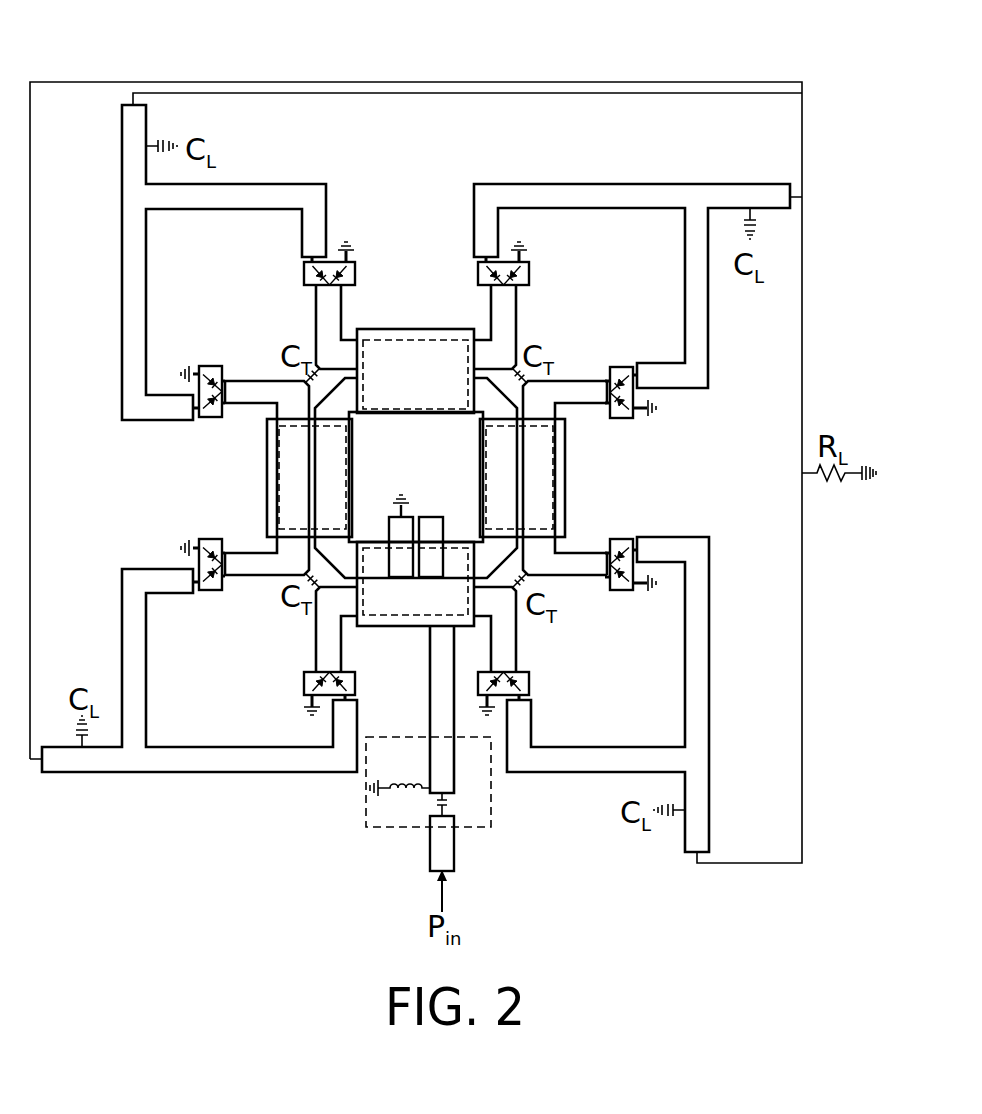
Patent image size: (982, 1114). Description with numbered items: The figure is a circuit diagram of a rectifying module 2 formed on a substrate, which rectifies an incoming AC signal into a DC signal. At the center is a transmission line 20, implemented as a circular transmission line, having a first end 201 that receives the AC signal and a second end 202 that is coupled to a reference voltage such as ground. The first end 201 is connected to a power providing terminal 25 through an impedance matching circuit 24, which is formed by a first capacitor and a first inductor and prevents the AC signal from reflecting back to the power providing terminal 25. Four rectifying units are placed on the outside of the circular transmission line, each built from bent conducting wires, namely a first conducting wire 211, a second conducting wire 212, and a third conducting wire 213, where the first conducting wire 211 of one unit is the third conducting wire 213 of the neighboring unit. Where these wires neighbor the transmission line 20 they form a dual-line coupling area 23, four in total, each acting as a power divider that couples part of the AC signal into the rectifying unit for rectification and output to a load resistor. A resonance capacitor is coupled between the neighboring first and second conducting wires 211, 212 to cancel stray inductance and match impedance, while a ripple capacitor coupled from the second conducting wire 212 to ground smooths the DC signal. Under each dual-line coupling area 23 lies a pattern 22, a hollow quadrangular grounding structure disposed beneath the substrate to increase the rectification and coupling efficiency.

The rectifying module 2 is at (75, 51).
The transmission line 20 is at (490, 400).
The first end 201 is at (430, 522).
The second end 202 is at (398, 528).
The first conducting wire 211 is at (607, 193).
The second conducting wire 212 is at (503, 307).
The third conducting wire 213 is at (573, 387).
The pattern 22 is at (393, 340).
The dual-line coupling area 23 is at (433, 330).
The impedance matching circuit 24 is at (491, 795).
The power providing terminal 25 is at (430, 847).